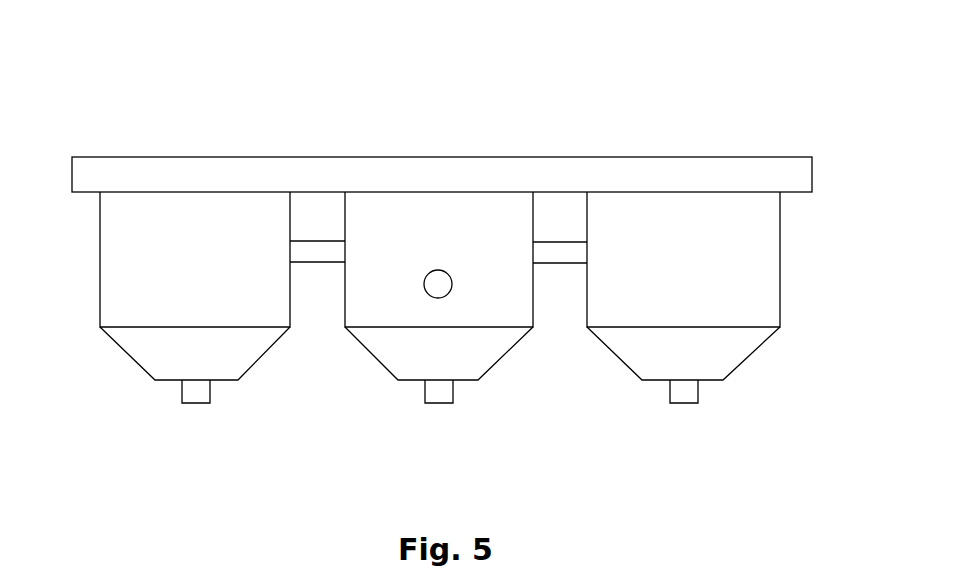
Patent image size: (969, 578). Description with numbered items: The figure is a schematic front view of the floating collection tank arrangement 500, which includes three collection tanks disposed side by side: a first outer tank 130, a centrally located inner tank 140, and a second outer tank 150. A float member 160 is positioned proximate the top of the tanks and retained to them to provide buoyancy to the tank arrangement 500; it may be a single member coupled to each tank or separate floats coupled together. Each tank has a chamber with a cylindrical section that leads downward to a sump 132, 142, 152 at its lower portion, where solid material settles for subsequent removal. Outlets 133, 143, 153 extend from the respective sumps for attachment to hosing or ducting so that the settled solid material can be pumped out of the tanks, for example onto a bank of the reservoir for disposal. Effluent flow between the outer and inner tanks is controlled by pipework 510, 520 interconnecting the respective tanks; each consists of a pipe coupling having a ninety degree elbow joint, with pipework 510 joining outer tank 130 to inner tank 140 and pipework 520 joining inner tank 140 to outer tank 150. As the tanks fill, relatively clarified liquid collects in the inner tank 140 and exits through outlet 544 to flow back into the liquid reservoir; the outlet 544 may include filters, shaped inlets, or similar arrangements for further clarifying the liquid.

The floating collection tank arrangement 500 is at (172, 130).
The float member 160 is at (443, 158).
The pipework 510 is at (323, 250).
The pipework 520 is at (560, 248).
The first outer tank 130 is at (171, 250).
The sump 132 is at (170, 362).
The outlet 133 is at (193, 403).
The inner tank 140 is at (415, 250).
The sump 142 is at (412, 360).
The outlet 143 is at (442, 403).
The outlet 544 is at (440, 285).
The second outer tank 150 is at (664, 250).
The sump 152 is at (713, 352).
The outlet 153 is at (683, 403).